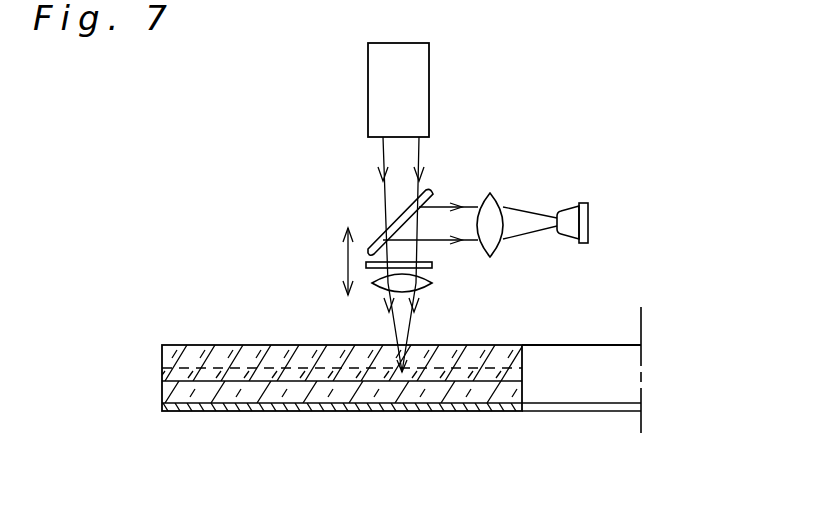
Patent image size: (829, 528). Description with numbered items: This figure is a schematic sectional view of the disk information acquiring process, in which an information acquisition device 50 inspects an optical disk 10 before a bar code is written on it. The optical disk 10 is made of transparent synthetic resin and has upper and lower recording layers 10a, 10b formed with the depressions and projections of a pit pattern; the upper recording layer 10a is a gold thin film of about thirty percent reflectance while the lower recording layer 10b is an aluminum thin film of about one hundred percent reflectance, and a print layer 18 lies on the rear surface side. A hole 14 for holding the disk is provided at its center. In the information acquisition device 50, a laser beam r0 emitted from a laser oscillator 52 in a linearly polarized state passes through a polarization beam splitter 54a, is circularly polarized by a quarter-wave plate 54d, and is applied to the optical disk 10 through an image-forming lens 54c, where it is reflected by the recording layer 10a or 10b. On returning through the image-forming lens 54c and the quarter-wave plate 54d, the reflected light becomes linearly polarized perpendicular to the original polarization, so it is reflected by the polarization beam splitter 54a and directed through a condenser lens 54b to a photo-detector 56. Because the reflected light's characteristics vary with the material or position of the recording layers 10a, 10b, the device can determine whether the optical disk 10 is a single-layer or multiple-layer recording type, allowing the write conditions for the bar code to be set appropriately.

The optical disk 10 is at (389, 346).
The upper recording layer 10a is at (276, 366).
The lower recording layer 10b is at (242, 379).
The hole 14 is at (605, 362).
The print layer 18 is at (453, 412).
The information acquisition device 50 is at (393, 90).
The laser oscillator 52 is at (417, 66).
The polarization beam splitter 54a is at (425, 198).
The condenser lens 54b is at (496, 203).
The image-forming lens 54c is at (430, 282).
The λ/4 plate 54d is at (434, 260).
The photo-detector 56 is at (589, 220).
The laser beam r0 is at (378, 181).